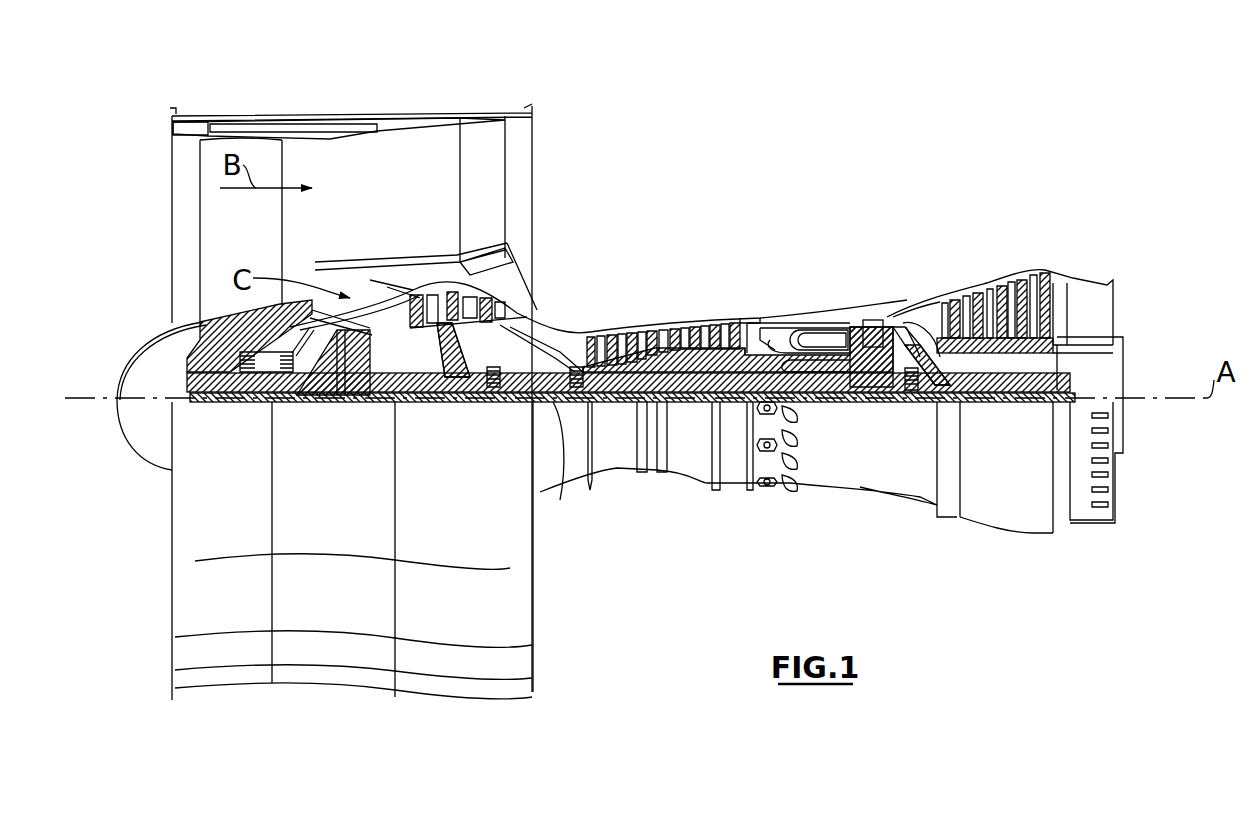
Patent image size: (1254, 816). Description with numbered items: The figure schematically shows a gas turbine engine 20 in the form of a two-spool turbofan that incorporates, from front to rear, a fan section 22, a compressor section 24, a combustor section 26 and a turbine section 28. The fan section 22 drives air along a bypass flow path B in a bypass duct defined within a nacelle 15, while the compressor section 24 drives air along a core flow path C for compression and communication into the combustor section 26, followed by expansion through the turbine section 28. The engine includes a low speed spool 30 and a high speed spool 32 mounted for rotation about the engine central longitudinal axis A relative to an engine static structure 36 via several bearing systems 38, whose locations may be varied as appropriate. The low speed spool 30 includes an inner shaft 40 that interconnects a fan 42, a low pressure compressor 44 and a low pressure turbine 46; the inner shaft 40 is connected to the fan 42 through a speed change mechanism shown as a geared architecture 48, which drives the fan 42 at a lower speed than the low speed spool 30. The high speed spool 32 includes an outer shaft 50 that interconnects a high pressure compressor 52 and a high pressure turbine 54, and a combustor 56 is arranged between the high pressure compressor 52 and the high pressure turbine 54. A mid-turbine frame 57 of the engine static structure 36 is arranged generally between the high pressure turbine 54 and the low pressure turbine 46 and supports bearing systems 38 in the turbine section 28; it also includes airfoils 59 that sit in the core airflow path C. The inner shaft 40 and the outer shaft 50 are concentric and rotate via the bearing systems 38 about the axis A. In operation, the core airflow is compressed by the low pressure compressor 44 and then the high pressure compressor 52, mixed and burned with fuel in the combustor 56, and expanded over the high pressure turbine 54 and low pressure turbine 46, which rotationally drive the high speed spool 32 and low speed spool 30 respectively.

The nacelle 15 is at (355, 116).
The gas turbine engine 20 is at (812, 168).
The fan section 22 is at (282, 107).
The compressor section 24 is at (585, 303).
The combustor section 26 is at (805, 295).
The turbine section 28 is at (955, 258).
The low speed spool 30 is at (690, 405).
The high speed spool 32 is at (732, 318).
The engine static structure 36 is at (732, 492).
The bearing systems 38 is at (490, 384).
The inner shaft 40 is at (562, 455).
The fan 42 is at (222, 242).
The low pressure compressor 44 is at (450, 308).
The low pressure turbine 46 is at (1000, 276).
The geared architecture 48 is at (360, 384).
The outer shaft 50 is at (812, 402).
The high pressure compressor 52 is at (663, 367).
The high pressure turbine 54 is at (873, 320).
The combustor 56 is at (807, 340).
The mid-turbine frame 57 is at (915, 305).
The airfoils 59 is at (945, 362).